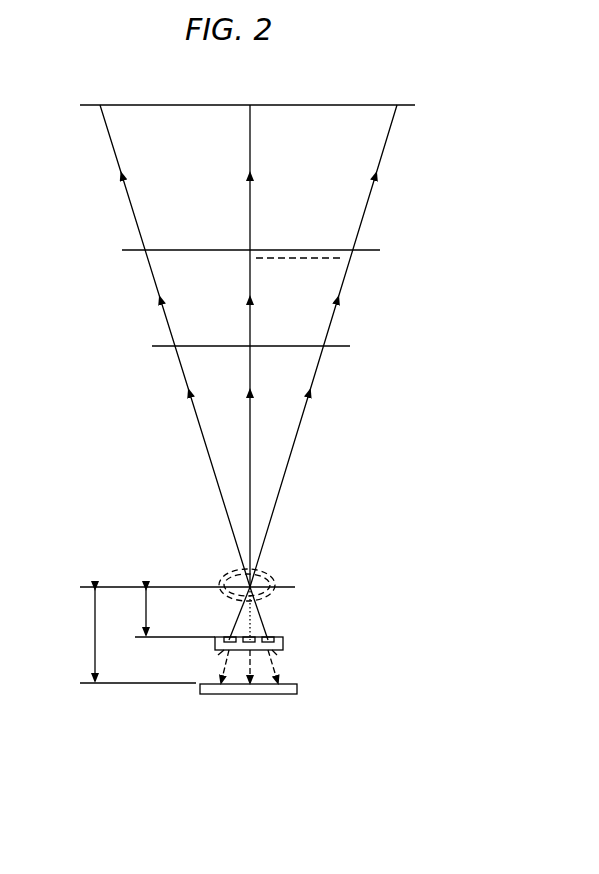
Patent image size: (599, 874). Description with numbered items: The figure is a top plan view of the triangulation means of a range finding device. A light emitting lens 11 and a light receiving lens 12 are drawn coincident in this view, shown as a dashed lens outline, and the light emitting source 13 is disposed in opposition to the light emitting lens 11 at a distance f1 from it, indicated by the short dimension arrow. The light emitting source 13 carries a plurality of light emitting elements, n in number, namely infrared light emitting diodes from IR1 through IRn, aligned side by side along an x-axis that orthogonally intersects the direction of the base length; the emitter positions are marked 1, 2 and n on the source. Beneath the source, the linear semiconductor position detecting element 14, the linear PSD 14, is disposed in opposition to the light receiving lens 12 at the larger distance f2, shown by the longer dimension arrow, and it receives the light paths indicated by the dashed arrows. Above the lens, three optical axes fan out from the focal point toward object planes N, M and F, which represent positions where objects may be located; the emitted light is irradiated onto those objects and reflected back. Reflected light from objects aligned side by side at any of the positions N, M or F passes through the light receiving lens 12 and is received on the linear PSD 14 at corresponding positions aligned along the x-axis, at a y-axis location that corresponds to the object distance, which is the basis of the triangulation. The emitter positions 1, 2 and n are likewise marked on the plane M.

The far object position F is at (254, 105).
The middle object position M is at (260, 250).
The near object position N is at (259, 346).
The first light emitting element position 1 is at (175, 346).
The second light emitting element position 2 is at (243, 346).
The nth light emitting element position n is at (323, 346).
The light emitting lens 11 is at (215, 573).
The light receiving lens 12 is at (272, 575).
The light emitting source 13 is at (283, 641).
The linear semiconductor position detecting element 14 is at (250, 694).
The nth infrared light emitting diode IRn is at (219, 652).
The first infrared light emitting diode IR1 is at (273, 653).
The distance between light emitting source and light emitting lens f1 is at (135, 612).
The distance between linear PSD and light receiving lens f2 is at (82, 635).